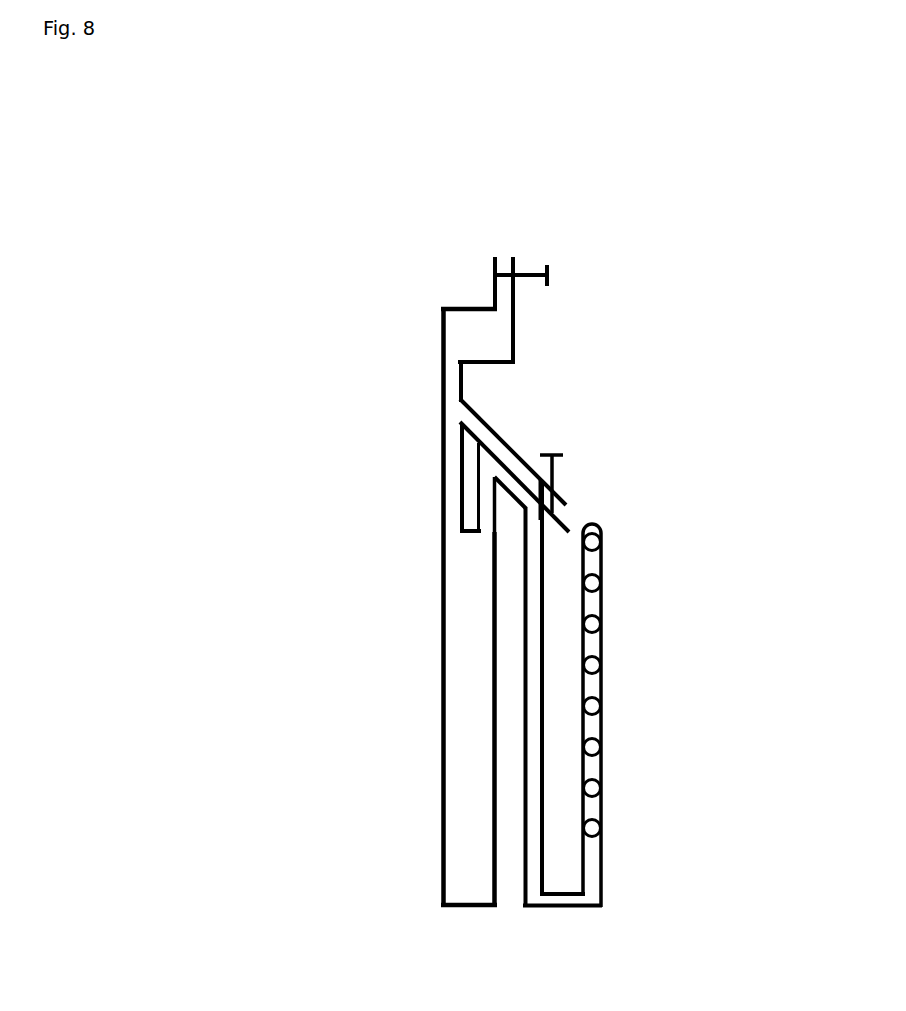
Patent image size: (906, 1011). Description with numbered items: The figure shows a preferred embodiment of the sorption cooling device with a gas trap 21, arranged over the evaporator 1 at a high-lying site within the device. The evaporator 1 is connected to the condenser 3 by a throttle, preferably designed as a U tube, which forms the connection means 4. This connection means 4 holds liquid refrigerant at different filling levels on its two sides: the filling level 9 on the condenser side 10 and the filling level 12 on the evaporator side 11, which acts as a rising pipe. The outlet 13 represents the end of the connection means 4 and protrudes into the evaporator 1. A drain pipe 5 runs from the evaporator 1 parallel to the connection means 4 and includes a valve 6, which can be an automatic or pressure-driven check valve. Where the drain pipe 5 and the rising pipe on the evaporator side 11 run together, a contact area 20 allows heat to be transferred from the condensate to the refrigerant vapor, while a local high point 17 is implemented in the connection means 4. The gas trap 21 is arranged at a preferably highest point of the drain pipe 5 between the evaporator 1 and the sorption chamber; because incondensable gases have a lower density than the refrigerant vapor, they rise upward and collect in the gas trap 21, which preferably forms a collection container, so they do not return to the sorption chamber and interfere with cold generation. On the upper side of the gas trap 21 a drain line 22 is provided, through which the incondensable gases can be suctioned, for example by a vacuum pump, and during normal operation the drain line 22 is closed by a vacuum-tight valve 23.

The evaporator 1 is at (442, 598).
The condenser 3 is at (602, 738).
The connection means 4 is at (567, 908).
The drain pipe 5 is at (470, 410).
The valve 6 is at (552, 487).
The filling level on the condenser side 9 is at (584, 805).
The condenser side 10 is at (602, 892).
The evaporator side 11 is at (524, 847).
The filling level on the evaporator side 12 is at (500, 476).
The outlet 13 is at (487, 530).
The local high point 17 is at (493, 463).
The contact area 20 is at (490, 458).
The gas trap 21 is at (443, 327).
The drain line 22 is at (513, 300).
The vacuum-tight valve 23 is at (547, 277).